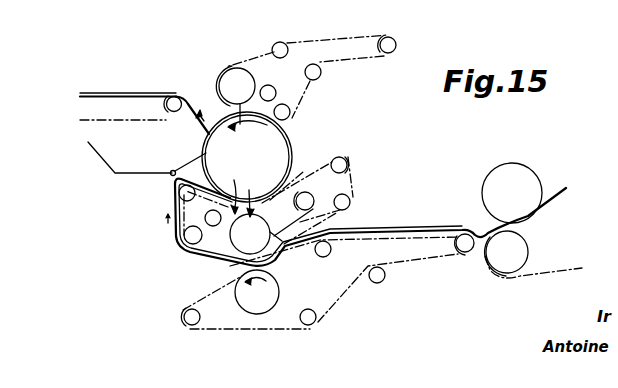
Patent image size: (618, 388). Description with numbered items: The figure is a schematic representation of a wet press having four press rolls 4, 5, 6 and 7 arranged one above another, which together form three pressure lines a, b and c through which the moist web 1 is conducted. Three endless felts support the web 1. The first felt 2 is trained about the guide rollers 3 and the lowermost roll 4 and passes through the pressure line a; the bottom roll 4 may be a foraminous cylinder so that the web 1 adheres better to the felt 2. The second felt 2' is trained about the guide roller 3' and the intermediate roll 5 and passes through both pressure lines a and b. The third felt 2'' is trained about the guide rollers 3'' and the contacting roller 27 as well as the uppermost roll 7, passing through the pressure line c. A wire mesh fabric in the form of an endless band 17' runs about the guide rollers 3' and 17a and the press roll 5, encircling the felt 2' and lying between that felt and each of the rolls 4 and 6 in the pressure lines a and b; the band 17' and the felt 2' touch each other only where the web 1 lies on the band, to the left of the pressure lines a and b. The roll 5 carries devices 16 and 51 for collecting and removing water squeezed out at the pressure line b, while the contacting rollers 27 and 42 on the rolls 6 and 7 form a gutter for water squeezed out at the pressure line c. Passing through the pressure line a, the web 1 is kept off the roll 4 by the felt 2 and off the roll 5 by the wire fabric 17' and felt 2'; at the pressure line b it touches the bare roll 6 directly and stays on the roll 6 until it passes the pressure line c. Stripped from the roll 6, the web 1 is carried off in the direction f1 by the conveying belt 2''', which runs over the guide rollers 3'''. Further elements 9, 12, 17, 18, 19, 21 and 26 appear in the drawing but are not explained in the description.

The moist web 1 is at (93, 93).
The first felt 2 is at (370, 254).
The second felt 2' is at (301, 203).
The third felt 2'' is at (307, 76).
The conveying belt 2''' is at (107, 107).
The guide rollers 3 is at (283, 294).
The guide roller 3' is at (247, 219).
The guide rollers 3'' is at (332, 62).
The guide rollers 3''' is at (186, 101).
The lowermost press roll 4 is at (274, 290).
The intermediate press roll 5 is at (267, 229).
The press roll 6 is at (281, 153).
The uppermost press roll 7 is at (223, 79).
The arm 9 is at (194, 164).
The frame bar 12 is at (125, 173).
The water collecting device 16 is at (232, 190).
The web 17 is at (533, 281).
The wire mesh band 17' is at (369, 177).
The guide roller 17a is at (179, 193).
The roller 18 is at (530, 183).
The roller 19 is at (500, 266).
The pivot 21 is at (171, 172).
The roller 26 is at (467, 234).
The contacting roller 27 is at (288, 115).
The contacting roller 42 is at (283, 86).
The water collecting device 51 is at (328, 236).
The pressure line a is at (249, 248).
The pressure line b is at (252, 195).
The pressure line c is at (238, 106).
The direction of travel f1 is at (142, 85).